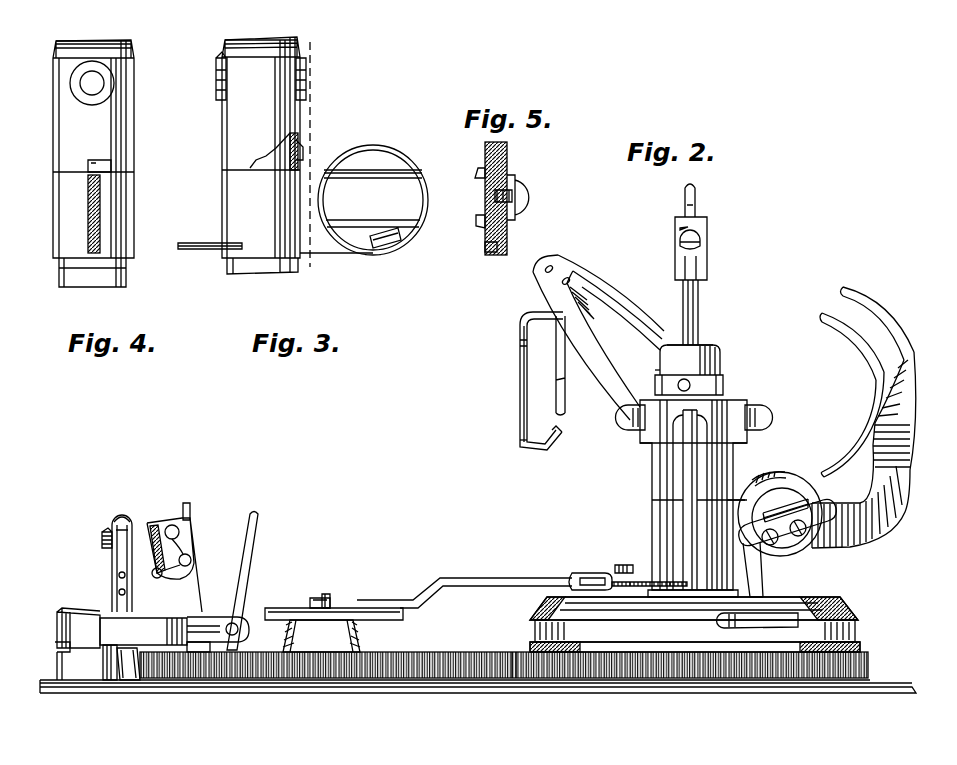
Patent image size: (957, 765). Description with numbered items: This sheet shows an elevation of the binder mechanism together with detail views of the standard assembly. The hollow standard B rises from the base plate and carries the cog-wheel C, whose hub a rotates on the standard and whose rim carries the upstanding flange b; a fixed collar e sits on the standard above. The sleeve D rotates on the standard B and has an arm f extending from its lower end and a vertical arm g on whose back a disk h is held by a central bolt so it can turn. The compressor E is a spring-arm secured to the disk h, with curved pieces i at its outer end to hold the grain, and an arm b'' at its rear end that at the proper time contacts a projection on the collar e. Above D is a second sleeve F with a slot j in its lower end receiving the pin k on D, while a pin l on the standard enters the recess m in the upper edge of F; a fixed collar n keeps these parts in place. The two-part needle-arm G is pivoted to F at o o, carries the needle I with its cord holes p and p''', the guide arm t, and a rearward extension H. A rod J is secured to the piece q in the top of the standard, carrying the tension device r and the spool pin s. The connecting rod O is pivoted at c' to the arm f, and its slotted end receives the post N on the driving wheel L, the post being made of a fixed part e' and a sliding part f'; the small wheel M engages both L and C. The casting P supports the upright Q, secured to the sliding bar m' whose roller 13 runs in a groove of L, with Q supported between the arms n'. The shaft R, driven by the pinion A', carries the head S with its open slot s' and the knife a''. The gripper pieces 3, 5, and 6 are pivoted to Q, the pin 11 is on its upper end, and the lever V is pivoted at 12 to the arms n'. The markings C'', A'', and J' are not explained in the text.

In FIG. 4, the sleeve F is at (100, 149).
In FIG. 3, the sleeve F is at (261, 147).
In FIG. 2, the sleeve F is at (686, 495).
In FIG. 4, the sleeve D is at (101, 229).
In FIG. 3, the sleeve D is at (261, 191).
In FIG. 2, the sleeve D is at (677, 564).
In FIG. 4, the standard B is at (92, 287).
In FIG. 3, the standard B is at (262, 211).
In FIG. 4, the fixed collar n is at (95, 31).
In FIG. 3, the fixed collar n is at (270, 29).
In FIG. 2, the fixed collar n is at (706, 338).
In FIG. 4, the pivot of needle-arm o is at (92, 83).
In FIG. 3, the pivot of needle-arm o is at (263, 154).
In FIG. 2, the pivot of needle-arm o is at (695, 417).
In FIG. 4, the slot j is at (99, 160).
In FIG. 3, the slot j is at (303, 153).
In FIG. 4, the pin k is at (88, 178).
In FIG. 3, the arm f is at (210, 256).
In FIG. 2, the arm f is at (629, 574).
In FIG. 3, the vertical arm g is at (364, 186).
In FIG. 5, the vertical arm g is at (507, 198).
In FIG. 2, the vertical arm g is at (774, 504).
In FIG. 3, the disk h is at (373, 200).
In FIG. 5, the disk h is at (474, 189).
In FIG. 2, the disk h is at (785, 510).
In FIG. 2, the rod J is at (705, 200).
In FIG. 2, the tension device r is at (716, 232).
In FIG. 2, the pin s is at (704, 312).
In FIG. 2, the pin l is at (728, 380).
In FIG. 2, the piece of metal q is at (690, 360).
In FIG. 2, the slot or recess m is at (641, 357).
In FIG. 2, the needle-arm G is at (598, 337).
In FIG. 2, the needle I is at (528, 381).
In FIG. 2, the cord holes p is at (521, 312).
In FIG. 2, the cord hole p''' is at (516, 452).
In FIG. 2, the arm t is at (568, 365).
In FIG. 2, the rearward extension of needle-arm H is at (690, 502).
In FIG. 2, the curved pieces i is at (867, 382).
In FIG. 2, the compressor E is at (864, 450).
In FIG. 2, the arm on compressor b'' is at (788, 548).
In FIG. 2, the fixed collar e is at (757, 620).
In FIG. 2, the flange b is at (699, 624).
In FIG. 2, the cog-wheel C is at (514, 654).
In FIG. 2, the plinth plate C'' is at (682, 594).
In FIG. 2, the hub a is at (649, 704).
In FIG. 2, the pinion A' is at (478, 701).
In FIG. 2, the connecting rod or bar O is at (464, 584).
In FIG. 2, the pivot c' is at (628, 569).
In FIG. 2, the cog-wheel L is at (408, 639).
In FIG. 2, the small cog-wheel M is at (510, 668).
In FIG. 2, the post or pin N is at (334, 630).
In FIG. 2, the fixed part of post e' is at (312, 595).
In FIG. 2, the movable part of post f' is at (331, 593).
In FIG. 2, the casting P is at (77, 644).
In FIG. 2, the left base section A'' is at (123, 669).
In FIG. 2, the left post J' is at (115, 682).
In FIG. 2, the sliding bar m' is at (153, 684).
In FIG. 2, the friction-roller 13 is at (205, 680).
In FIG. 2, the shaft R is at (112, 563).
In FIG. 2, the jaw or head S is at (97, 536).
In FIG. 2, the open slot s' is at (133, 510).
In FIG. 2, the knife or blade a'' is at (92, 567).
In FIG. 2, the upright piece Q is at (181, 565).
In FIG. 2, the pivoted piece 3 is at (159, 512).
In FIG. 2, the pin 11 is at (188, 504).
In FIG. 2, the pivoted piece 6 is at (157, 591).
In FIG. 2, the pivoted piece 5 is at (170, 591).
In FIG. 2, the lever V is at (248, 546).
In FIG. 2, the arms n' is at (218, 629).
In FIG. 2, the pivot 12 is at (248, 618).